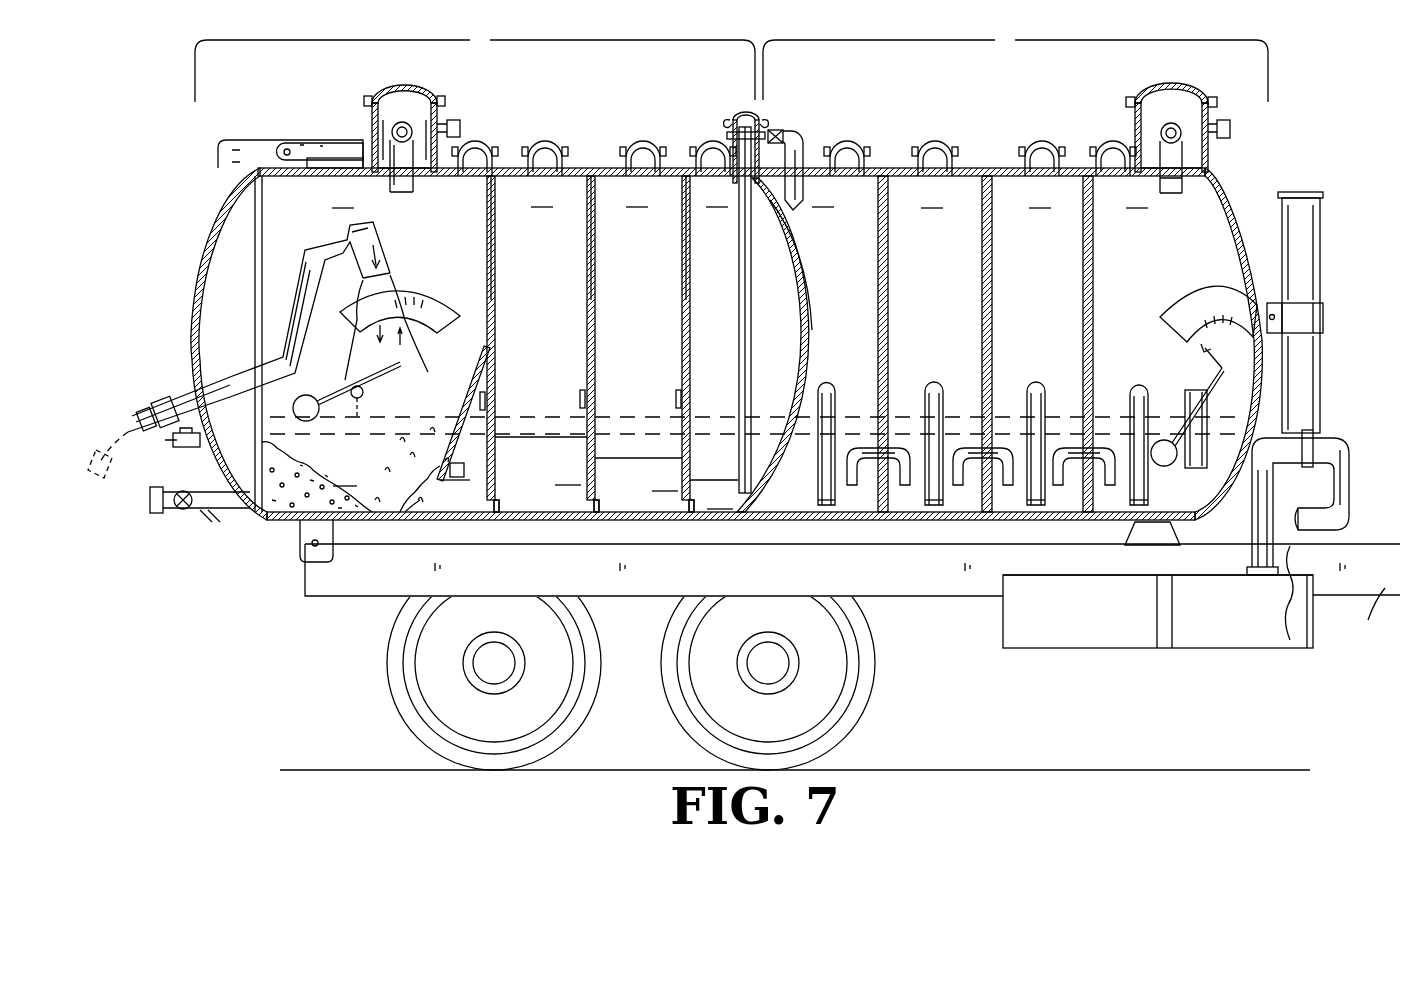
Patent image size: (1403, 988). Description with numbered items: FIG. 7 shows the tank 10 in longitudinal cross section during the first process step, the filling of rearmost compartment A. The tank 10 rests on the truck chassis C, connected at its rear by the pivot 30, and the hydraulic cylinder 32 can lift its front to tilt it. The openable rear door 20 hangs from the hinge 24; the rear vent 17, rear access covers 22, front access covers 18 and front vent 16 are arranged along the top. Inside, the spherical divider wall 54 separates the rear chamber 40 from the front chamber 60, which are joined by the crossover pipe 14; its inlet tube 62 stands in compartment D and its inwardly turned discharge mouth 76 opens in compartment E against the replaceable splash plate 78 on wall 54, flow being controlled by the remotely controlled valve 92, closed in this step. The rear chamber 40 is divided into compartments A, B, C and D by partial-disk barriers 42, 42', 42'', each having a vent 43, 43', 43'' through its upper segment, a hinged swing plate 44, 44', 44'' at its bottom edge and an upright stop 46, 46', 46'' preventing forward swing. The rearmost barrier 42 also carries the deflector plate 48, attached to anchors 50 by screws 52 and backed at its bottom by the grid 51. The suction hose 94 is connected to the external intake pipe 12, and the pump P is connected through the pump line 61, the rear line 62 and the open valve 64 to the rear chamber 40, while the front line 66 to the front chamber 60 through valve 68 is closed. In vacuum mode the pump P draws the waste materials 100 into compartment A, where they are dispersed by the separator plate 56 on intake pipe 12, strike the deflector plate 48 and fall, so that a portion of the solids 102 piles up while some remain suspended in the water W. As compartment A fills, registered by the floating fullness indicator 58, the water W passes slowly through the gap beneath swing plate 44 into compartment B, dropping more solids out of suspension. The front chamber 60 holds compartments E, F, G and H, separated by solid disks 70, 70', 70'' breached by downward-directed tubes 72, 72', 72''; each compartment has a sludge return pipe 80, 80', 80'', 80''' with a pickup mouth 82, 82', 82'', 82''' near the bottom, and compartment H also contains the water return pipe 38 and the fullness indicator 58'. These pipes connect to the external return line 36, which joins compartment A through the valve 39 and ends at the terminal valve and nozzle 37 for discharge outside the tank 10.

The tank 10 is at (600, 168).
The external intake pipe 12 is at (187, 396).
The crossover pipe 14 is at (762, 120).
The vent 16 is at (1185, 93).
The vent 17 is at (386, 95).
The front access covers 18 is at (860, 140).
The rear door 20 is at (193, 310).
The rear access covers 22 is at (490, 140).
The hinge 24 is at (300, 140).
The pivot 30 is at (335, 555).
The hydraulic cylinder 32 is at (1312, 372).
The return line 36 is at (547, 416).
The terminal valve and nozzle 37 is at (175, 447).
The water return pipe 38 is at (1207, 425).
The valve 39 is at (350, 388).
The rear chamber 40 is at (470, 40).
The barrier 42 is at (508, 344).
The barrier 42' is at (569, 344).
The barrier 42'' is at (658, 344).
The vent 43 is at (465, 238).
The vent 43' is at (568, 238).
The vent 43'' is at (658, 238).
The swing plate 44 is at (541, 454).
The swing plate 44' is at (638, 447).
The swing plate 44'' is at (677, 496).
The stop 46 is at (520, 491).
The stop 46' is at (617, 487).
The stop 46'' is at (709, 482).
The deflector plate 48 is at (470, 390).
The anchors 50 is at (446, 482).
The grid 51 is at (426, 504).
The screws 52 is at (385, 470).
The divider wall 54 is at (808, 345).
The separator plate 56 is at (392, 255).
The fullness indicator 58 is at (347, 414).
The fullness indicator 58' is at (1204, 376).
The front chamber 60 is at (995, 40).
The pump line 61 is at (1350, 460).
The rear line 62 is at (392, 185).
The valve 64 is at (455, 120).
The front line 66 is at (1182, 193).
The valve 68 is at (1230, 138).
The disk 70 is at (904, 344).
The disk 70' is at (1016, 344).
The disk 70'' is at (1122, 344).
The tube 72 is at (884, 436).
The tube 72' is at (974, 416).
The tube 72'' is at (1073, 416).
The discharge mouth 76 is at (805, 210).
The splash plate 78 is at (812, 250).
The sludge return pipe 80 is at (844, 426).
The sludge return pipe 80' is at (919, 413).
The sludge return pipe 80'' is at (1021, 413).
The sludge return pipe 80''' is at (1120, 427).
The pickup mouth 82 is at (842, 500).
The pickup mouth 82' is at (966, 524).
The pickup mouth 82'' is at (1065, 524).
The pickup mouth 82''' is at (1170, 493).
The crossover pipe valve 92 is at (785, 134).
The suction hose 94 is at (136, 412).
The waste materials 100 is at (378, 406).
The solids 102 is at (277, 520).
The compartment A is at (343, 193).
The compartment B is at (542, 192).
The compartment C is at (1005, 408).
The compartment D is at (717, 192).
The compartment E is at (823, 192).
The compartment F is at (932, 193).
The compartment G is at (1040, 193).
The compartment H is at (1137, 193).
The water W is at (532, 484).
The pump P is at (1108, 632).